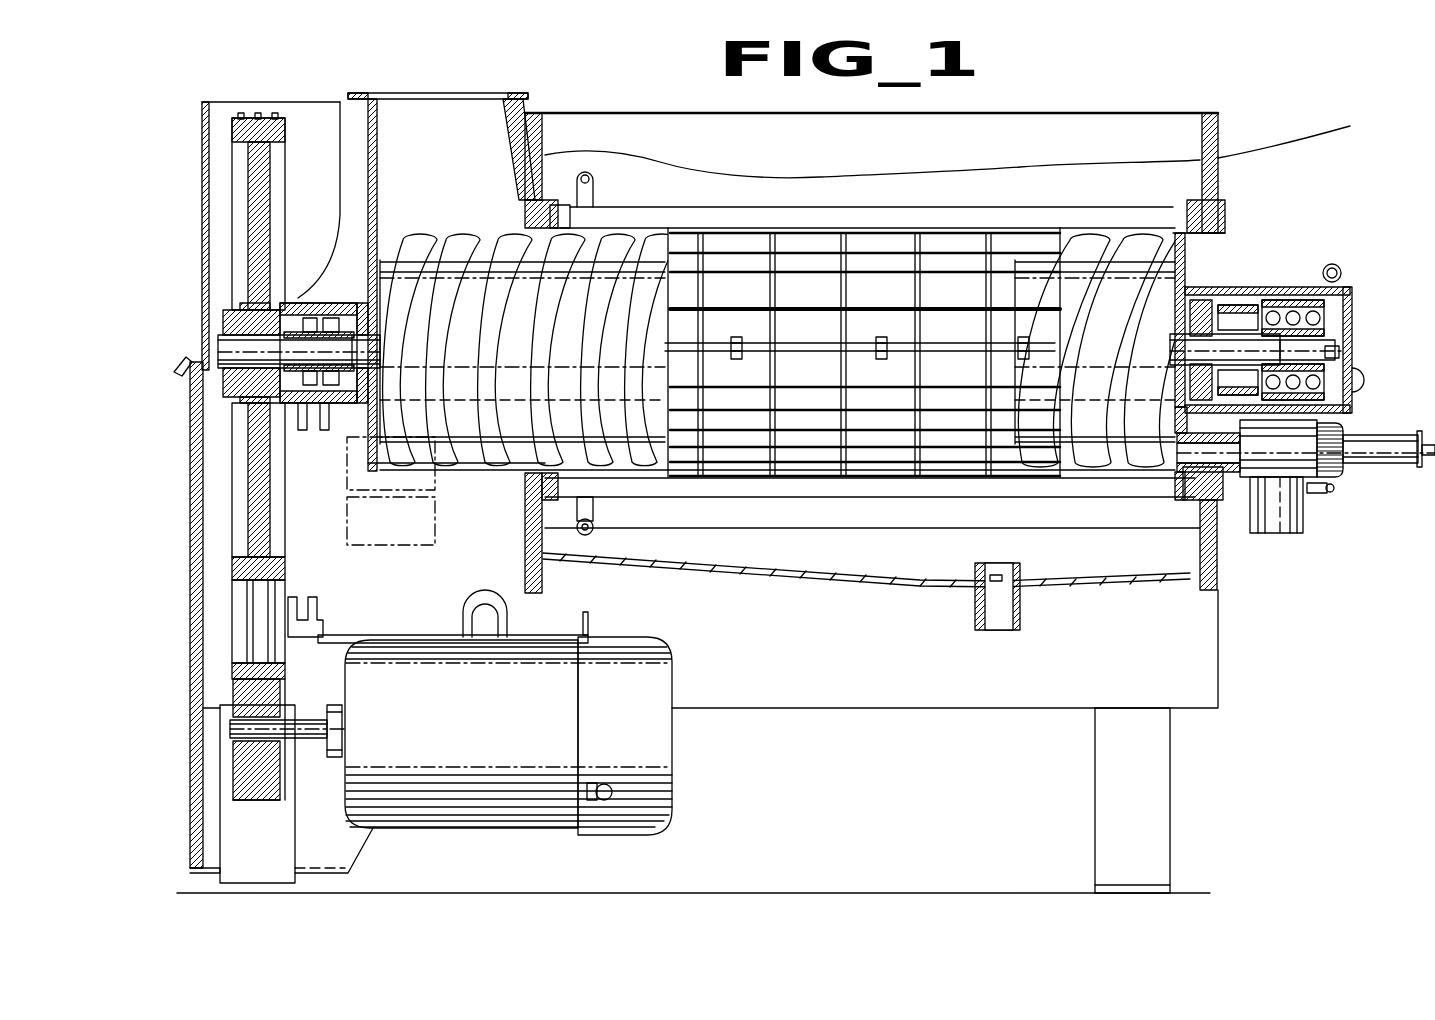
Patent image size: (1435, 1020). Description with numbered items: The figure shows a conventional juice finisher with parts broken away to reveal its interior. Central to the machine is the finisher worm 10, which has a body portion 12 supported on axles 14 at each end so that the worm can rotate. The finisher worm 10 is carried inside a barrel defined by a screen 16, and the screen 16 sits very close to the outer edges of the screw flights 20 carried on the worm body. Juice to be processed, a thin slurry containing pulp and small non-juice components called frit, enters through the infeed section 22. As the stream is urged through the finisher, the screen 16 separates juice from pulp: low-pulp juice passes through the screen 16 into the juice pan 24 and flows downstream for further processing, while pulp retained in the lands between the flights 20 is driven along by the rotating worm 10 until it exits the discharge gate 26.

The finisher worm 10 is at (477, 214).
The body portion 12 is at (634, 266).
The axles 14 is at (1236, 335).
The screen 16 is at (897, 268).
The screw flights 20 is at (626, 278).
The infeed section 22 is at (455, 80).
The juice pan 24 is at (1170, 565).
The discharge gate 26 is at (1305, 516).